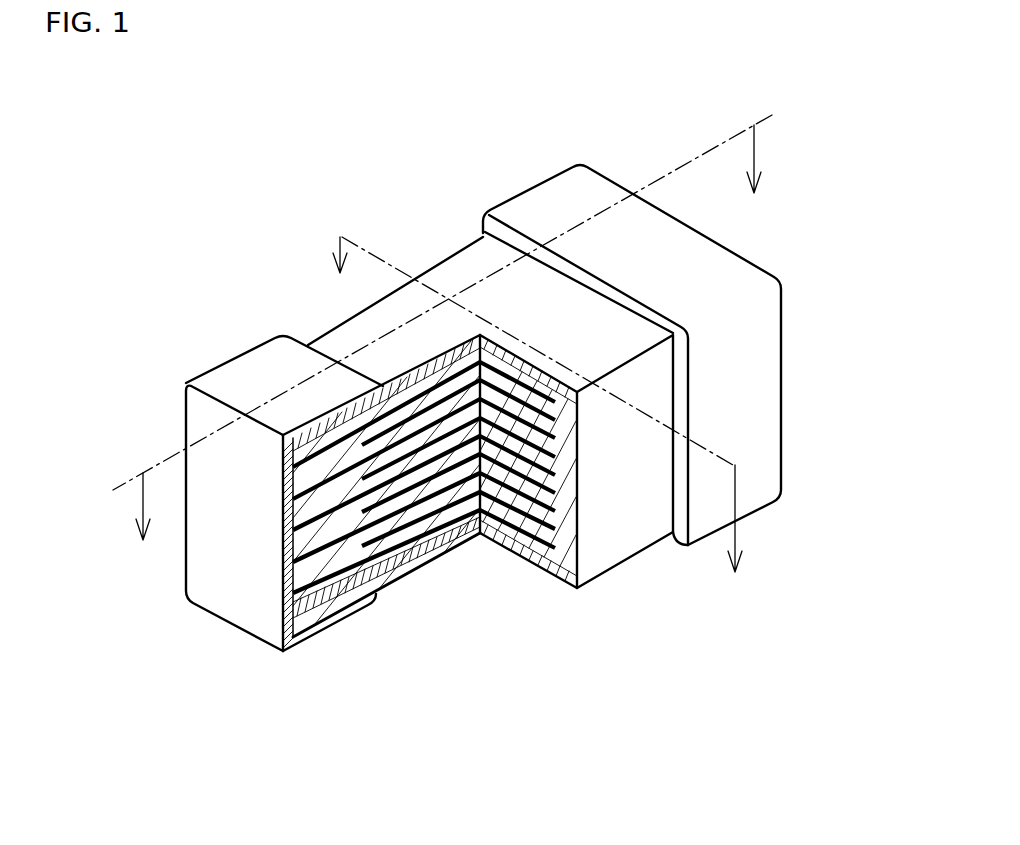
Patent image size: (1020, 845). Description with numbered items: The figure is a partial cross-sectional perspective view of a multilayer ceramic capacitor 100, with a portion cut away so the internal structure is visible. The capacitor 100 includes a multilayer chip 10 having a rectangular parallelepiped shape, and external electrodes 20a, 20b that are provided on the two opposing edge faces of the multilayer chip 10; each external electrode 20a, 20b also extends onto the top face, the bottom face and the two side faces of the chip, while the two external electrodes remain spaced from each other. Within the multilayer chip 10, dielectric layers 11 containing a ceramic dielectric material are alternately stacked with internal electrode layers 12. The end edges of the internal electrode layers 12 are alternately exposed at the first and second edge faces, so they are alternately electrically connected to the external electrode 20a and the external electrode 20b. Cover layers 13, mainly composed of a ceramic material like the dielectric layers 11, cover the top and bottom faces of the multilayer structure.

The multilayer ceramic capacitor 100 is at (878, 100).
The multilayer chip 10 is at (320, 316).
The dielectric layer 11 is at (412, 522).
The internal electrode layer 12 is at (468, 535).
The cover layer 13 is at (452, 277).
The external electrode 20a is at (217, 367).
The external electrode 20b is at (537, 206).